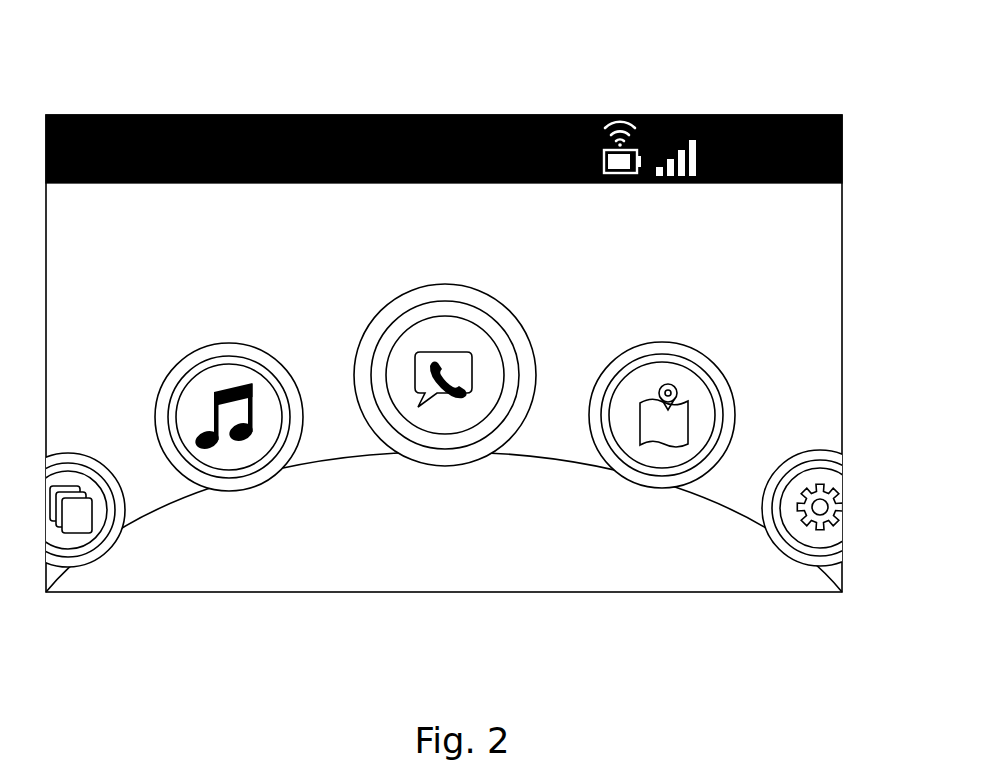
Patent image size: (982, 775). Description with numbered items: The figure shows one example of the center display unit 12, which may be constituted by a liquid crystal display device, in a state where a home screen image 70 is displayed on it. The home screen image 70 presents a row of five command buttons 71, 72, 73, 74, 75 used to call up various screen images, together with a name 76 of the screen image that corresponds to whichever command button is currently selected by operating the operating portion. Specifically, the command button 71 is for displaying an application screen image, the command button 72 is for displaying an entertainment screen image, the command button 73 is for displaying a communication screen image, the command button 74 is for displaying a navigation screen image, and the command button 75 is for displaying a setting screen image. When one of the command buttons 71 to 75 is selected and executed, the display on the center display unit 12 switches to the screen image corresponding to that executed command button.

The center display unit 12 is at (709, 93).
The home screen image 70 is at (818, 269).
The command button 71 is at (75, 478).
The command button 72 is at (218, 377).
The command button 73 is at (446, 327).
The command button 74 is at (658, 372).
The command button 75 is at (817, 477).
The name of the screen image 76 is at (427, 560).